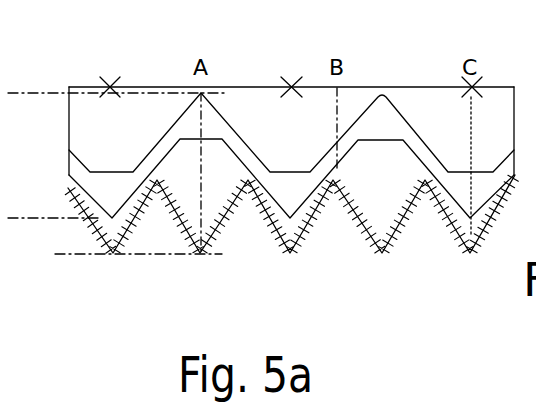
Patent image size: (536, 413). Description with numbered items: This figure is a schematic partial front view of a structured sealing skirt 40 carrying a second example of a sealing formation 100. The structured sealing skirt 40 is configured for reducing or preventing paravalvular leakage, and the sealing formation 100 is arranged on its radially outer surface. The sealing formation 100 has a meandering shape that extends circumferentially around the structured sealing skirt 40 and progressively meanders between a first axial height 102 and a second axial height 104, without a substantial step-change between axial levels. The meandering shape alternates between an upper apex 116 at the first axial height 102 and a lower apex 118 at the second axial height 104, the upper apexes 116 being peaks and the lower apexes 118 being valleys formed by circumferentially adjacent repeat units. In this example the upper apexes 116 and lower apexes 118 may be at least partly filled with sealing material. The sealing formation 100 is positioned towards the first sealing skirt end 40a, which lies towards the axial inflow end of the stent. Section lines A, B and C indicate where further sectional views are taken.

The structured sealing skirt 40 is at (144, 107).
The first sealing skirt end 40a is at (73, 256).
The sealing formation 100 is at (412, 129).
The first axial height 102 is at (118, 79).
The second axial height 104 is at (54, 233).
The upper apex 116 is at (205, 122).
The lower apex 118 is at (462, 215).